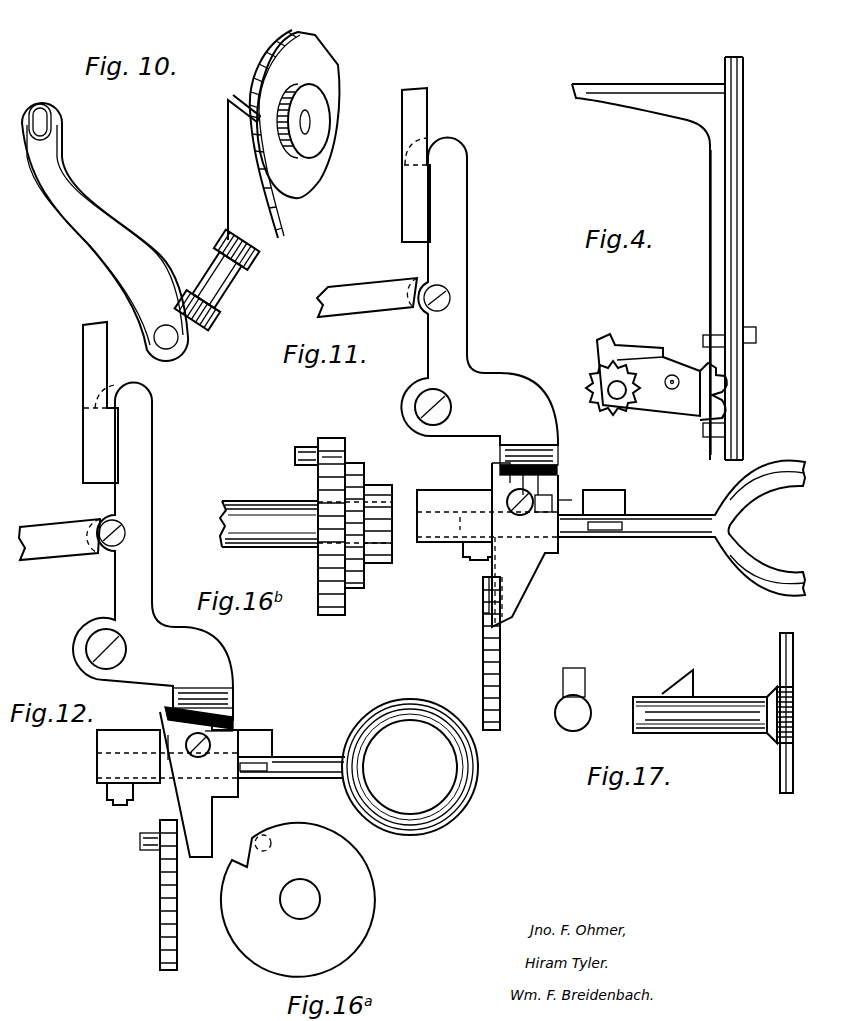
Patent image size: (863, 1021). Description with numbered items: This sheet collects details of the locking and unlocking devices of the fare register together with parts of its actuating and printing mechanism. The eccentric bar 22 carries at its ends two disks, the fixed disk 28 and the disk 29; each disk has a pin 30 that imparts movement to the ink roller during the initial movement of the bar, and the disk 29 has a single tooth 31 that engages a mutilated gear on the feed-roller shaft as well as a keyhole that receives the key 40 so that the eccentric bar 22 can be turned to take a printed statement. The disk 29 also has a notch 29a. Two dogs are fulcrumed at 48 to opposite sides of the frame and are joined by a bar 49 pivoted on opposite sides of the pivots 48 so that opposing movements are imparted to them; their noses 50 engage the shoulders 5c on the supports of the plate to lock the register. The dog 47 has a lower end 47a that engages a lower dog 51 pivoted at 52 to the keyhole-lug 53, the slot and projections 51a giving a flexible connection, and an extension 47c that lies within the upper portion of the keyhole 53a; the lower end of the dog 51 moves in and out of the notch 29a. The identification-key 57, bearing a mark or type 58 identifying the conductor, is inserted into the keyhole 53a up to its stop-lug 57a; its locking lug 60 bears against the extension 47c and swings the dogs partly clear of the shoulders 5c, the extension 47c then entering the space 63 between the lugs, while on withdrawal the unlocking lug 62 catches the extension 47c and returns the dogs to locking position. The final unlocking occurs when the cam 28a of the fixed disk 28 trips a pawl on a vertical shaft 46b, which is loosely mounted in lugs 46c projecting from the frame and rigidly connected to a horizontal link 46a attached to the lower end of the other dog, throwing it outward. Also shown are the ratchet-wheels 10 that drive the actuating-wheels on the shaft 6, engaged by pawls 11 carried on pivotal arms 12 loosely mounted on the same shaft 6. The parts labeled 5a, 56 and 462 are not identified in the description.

In FIG. 10, the horizontal link 46a is at (105, 232).
In FIG. 10, the plate 462 is at (228, 167).
In FIG. 10, the vertical shaft 46b is at (208, 283).
In FIG. 10, the lugs 46c is at (248, 268).
In FIG. 10, the fixed disk 28 is at (320, 156).
In FIG. 10, the cam 28a is at (257, 134).
In FIG. 11, the dog 47 is at (479, 292).
In FIG. 12, the dog 47 is at (153, 551).
In FIG. 11, the lower end of dog 47a is at (510, 462).
In FIG. 12, the lower end of dog 47a is at (230, 697).
In FIG. 11, the extension 47c is at (548, 488).
In FIG. 12, the extension 47c is at (222, 733).
In FIG. 11, the plate 5a is at (408, 122).
In FIG. 12, the plate 5a is at (100, 402).
In FIG. 11, the shoulders 5c is at (406, 165).
In FIG. 11, the noses 50 is at (432, 150).
In FIG. 12, the noses 50 is at (112, 393).
In FIG. 11, the bar 49 is at (383, 297).
In FIG. 12, the bar 49 is at (72, 539).
In FIG. 11, the pivots 48 is at (413, 404).
In FIG. 12, the pivots 48 is at (126, 650).
In FIG. 11, the lower dog 51 is at (525, 545).
In FIG. 12, the lower dog 51 is at (199, 784).
In FIG. 11, the slot and projections 51a is at (500, 473).
In FIG. 12, the slot and projections 51a is at (173, 722).
In FIG. 11, the pivot 52 is at (508, 500).
In FIG. 12, the pivot 52 is at (196, 756).
In FIG. 11, the keyhole-lug 53 is at (548, 563).
In FIG. 4, the keyhole-lug 53 is at (712, 288).
In FIG. 12, the keyhole-lug 53 is at (128, 756).
In FIG. 11, the keyhole 53a is at (487, 524).
In FIG. 12, the keyhole 53a is at (110, 762).
In FIG. 11, the unlocking lug 62 is at (552, 502).
In FIG. 12, the unlocking lug 62 is at (163, 752).
In FIG. 11, the space 63 is at (570, 508).
In FIG. 11, the locking lug 60 is at (604, 502).
In FIG. 12, the locking lug 60 is at (273, 738).
In FIG. 11, the identification-key 57 is at (678, 518).
In FIG. 12, the identification-key 57 is at (333, 760).
In FIG. 11, the stop-lug 57a is at (610, 535).
In FIG. 12, the stop-lug 57a is at (258, 777).
In FIG. 11, the mark or type 58 is at (463, 553).
In FIG. 12, the mark or type 58 is at (107, 793).
In FIG. 11, the disk 29 is at (483, 640).
In FIG. 12, the disk 29 is at (160, 921).
In FIG. 16A, the disk 29 is at (298, 900).
In FIG. 11, the notch 29a is at (483, 612).
In FIG. 12, the notch 29a is at (168, 852).
In FIG. 16A, the notch 29a is at (242, 855).
In FIG. 16B, the notch 29a is at (331, 463).
In FIG. 12, the pin 30 is at (143, 838).
In FIG. 16B, the pin 30 is at (298, 447).
In FIG. 16B, the single tooth 31 is at (353, 483).
In FIG. 16B, the eccentric bar 22 is at (242, 501).
In FIG. 16B, the gear 56 is at (318, 563).
In FIG. 4, the shaft 6 is at (607, 388).
In FIG. 4, the ratchet-wheels 10 is at (633, 417).
In FIG. 4, the pawls 11 is at (667, 373).
In FIG. 4, the pivotal arms 12 is at (694, 391).
In FIG. 17, the key 40 is at (740, 686).